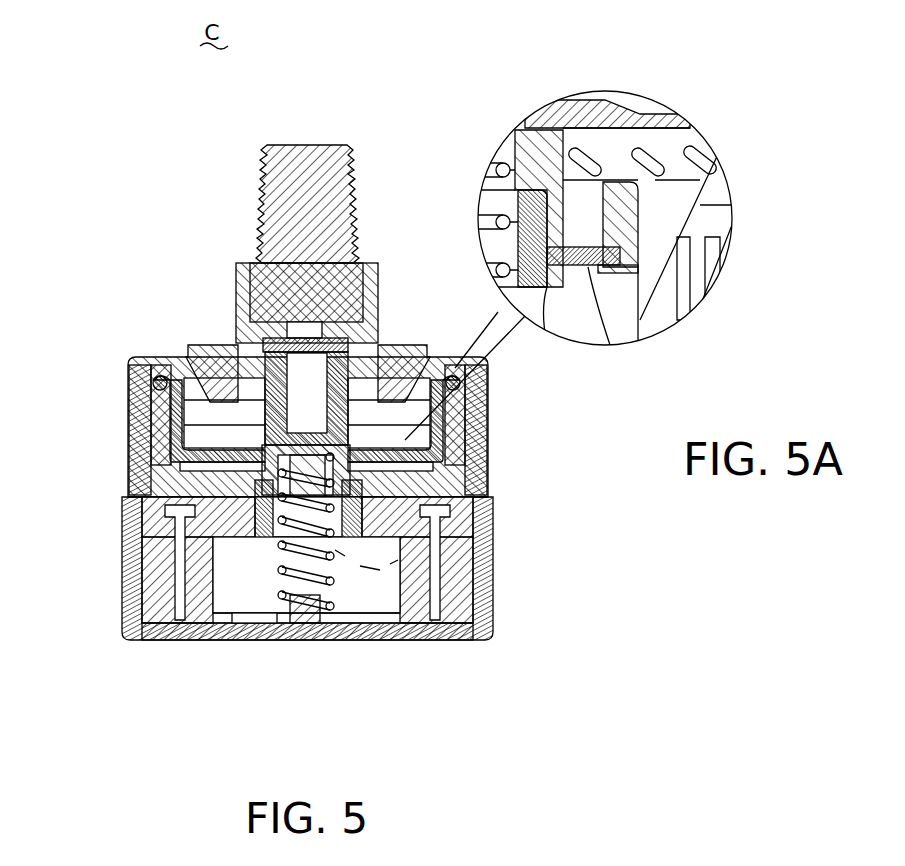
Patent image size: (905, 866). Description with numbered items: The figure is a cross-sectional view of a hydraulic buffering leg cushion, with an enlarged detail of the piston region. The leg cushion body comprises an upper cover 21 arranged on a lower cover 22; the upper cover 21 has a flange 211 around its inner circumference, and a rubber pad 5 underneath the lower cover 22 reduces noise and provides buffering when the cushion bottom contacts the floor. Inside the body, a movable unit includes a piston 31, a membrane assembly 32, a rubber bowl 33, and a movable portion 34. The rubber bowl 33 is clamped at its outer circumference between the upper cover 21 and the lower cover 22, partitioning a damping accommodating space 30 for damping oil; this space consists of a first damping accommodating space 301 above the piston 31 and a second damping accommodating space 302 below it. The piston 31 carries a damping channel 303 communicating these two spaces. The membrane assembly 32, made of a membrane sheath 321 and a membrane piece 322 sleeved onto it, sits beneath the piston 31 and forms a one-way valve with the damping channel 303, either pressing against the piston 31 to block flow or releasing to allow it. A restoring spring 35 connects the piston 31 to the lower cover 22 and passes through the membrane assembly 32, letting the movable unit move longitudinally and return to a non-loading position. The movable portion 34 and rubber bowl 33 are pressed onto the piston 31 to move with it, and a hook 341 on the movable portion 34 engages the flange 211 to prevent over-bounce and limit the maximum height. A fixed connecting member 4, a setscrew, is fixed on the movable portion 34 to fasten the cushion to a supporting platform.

In FIG. 5, the fixed connecting member 4 is at (262, 205).
In FIG. 5, the rubber pad 5 is at (440, 640).
In FIG. 5, the upper cover 21 is at (140, 373).
In FIG. 5, the lower cover 22 is at (130, 610).
In FIG. 5, the damping accommodating space 30 is at (237, 533).
In FIG. 5A, the piston 31 is at (539, 208).
In FIG. 5A, the membrane assembly 32 is at (569, 238).
In FIG. 5A, the rubber bowl 33 is at (597, 93).
In FIG. 5, the movable portion 34 is at (236, 302).
In FIG. 5, the restoring spring 35 is at (280, 573).
In FIG. 5, the flange 211 is at (217, 392).
In FIG. 5, the first damping accommodating space 301 is at (255, 470).
In FIG. 5, the second damping accommodating space 302 is at (220, 565).
In FIG. 5A, the damping channel 303 is at (618, 227).
In FIG. 5A, the membrane sheath 321 is at (532, 238).
In FIG. 5A, the membrane piece 322 is at (583, 256).
In FIG. 5, the hook 341 is at (200, 428).